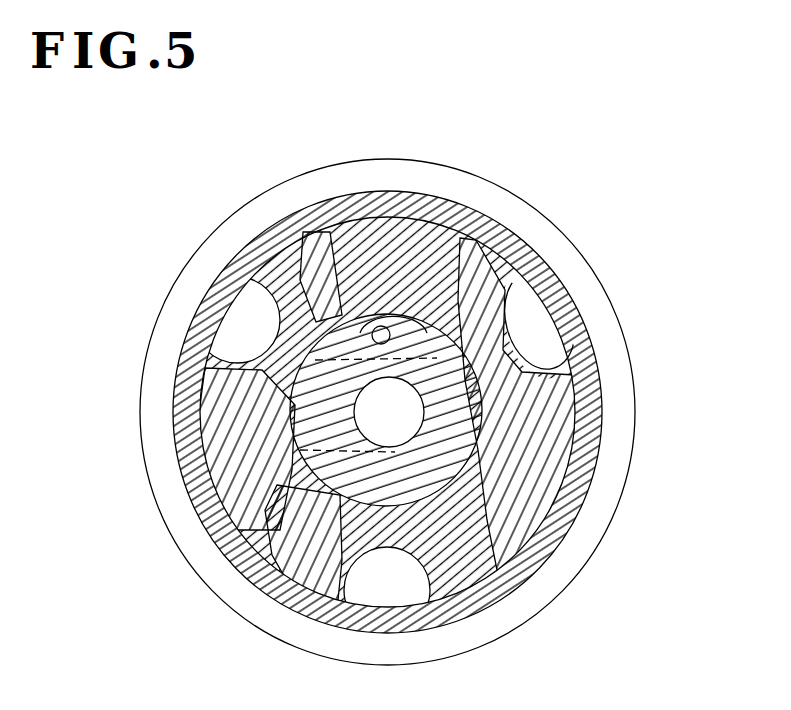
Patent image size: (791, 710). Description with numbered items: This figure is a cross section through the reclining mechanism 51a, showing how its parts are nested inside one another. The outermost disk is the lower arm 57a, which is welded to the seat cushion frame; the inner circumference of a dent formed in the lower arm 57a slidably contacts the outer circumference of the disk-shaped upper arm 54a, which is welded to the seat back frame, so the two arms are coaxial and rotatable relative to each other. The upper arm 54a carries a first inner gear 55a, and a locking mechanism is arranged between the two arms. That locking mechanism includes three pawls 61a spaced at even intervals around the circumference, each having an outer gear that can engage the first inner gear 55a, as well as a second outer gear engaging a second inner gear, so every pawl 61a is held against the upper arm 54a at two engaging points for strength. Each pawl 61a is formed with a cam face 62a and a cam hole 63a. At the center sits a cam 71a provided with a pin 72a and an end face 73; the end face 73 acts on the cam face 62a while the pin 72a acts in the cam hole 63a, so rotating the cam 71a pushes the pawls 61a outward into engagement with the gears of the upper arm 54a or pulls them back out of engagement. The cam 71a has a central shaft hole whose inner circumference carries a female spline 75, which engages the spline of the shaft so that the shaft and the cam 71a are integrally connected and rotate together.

The reclining mechanism 51a is at (522, 192).
The upper arm 54a is at (588, 328).
The first inner gear 55a is at (572, 311).
The lower arm 57a is at (604, 362).
The pawl 61a is at (440, 272).
The cam face 62a is at (262, 272).
The cam hole 63a is at (389, 323).
The cam 71a is at (500, 332).
The pin 72a is at (404, 318).
The end face 73 is at (372, 307).
The female spline 75 is at (230, 540).